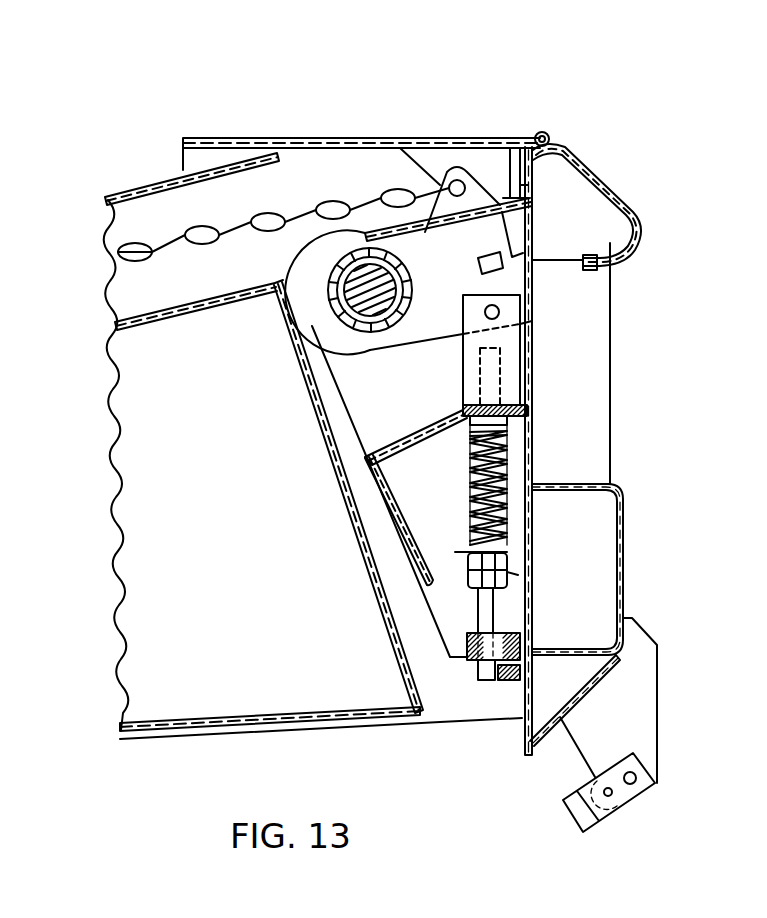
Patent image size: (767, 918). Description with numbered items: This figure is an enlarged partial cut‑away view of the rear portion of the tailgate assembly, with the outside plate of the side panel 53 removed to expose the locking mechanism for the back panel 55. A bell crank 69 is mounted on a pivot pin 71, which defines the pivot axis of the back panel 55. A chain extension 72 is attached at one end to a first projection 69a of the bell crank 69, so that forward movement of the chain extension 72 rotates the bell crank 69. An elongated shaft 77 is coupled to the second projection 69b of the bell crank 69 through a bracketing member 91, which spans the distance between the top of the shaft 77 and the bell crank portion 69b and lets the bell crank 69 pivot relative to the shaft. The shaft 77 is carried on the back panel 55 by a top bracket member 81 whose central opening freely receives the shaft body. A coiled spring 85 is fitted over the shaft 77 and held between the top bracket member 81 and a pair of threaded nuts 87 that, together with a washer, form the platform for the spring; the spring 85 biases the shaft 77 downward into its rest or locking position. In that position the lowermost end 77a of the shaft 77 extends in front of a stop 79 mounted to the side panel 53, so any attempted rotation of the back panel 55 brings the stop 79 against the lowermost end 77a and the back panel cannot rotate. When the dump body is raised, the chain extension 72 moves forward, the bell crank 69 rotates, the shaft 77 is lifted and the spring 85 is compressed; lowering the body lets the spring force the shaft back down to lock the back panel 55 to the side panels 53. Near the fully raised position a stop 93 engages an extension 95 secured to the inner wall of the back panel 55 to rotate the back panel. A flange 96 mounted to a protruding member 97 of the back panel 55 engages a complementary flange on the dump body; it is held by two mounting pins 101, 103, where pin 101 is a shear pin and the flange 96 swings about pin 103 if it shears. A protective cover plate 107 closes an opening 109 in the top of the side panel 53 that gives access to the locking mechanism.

The side panel 53 is at (240, 556).
The back panel 55 is at (611, 431).
The bell crank 69 is at (433, 320).
The projection of the bell crank 69a is at (461, 179).
The second projection of the bell crank 69b is at (486, 305).
The pivot pin 71 is at (333, 313).
The chain extension 72 is at (232, 228).
The elongated shaft 77 is at (487, 613).
The lowermost end of the shaft 77a is at (463, 682).
The stop 79 is at (508, 682).
The top bracket member 81 is at (530, 397).
The coiled spring 85 is at (503, 478).
The threaded nuts 87 is at (510, 573).
The bracketing member 91 is at (533, 323).
The stop 93 is at (523, 253).
The extension 95 is at (527, 137).
The flange 96 is at (612, 817).
The protruding member 97 is at (632, 710).
The mounting pin 101 is at (613, 795).
The mounting pin 103 is at (637, 776).
The protective cover plate 107 is at (360, 135).
The opening 109 is at (305, 163).